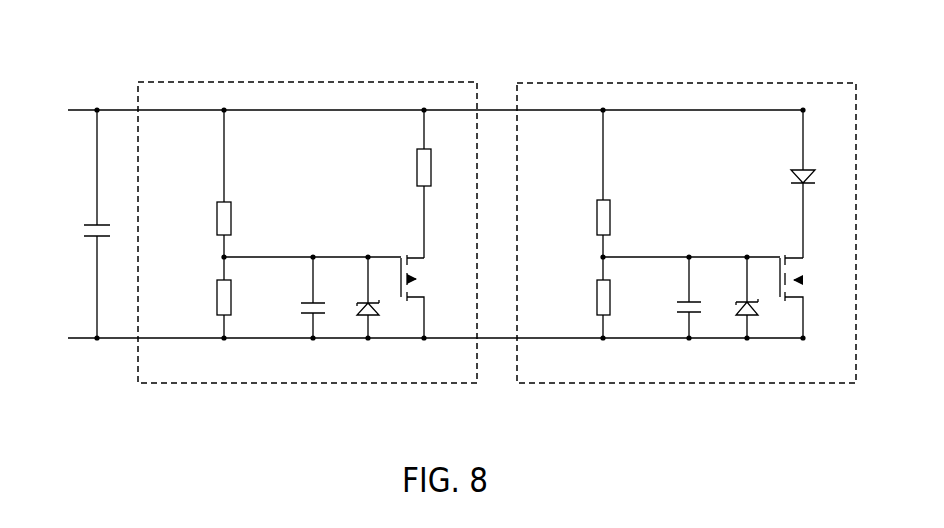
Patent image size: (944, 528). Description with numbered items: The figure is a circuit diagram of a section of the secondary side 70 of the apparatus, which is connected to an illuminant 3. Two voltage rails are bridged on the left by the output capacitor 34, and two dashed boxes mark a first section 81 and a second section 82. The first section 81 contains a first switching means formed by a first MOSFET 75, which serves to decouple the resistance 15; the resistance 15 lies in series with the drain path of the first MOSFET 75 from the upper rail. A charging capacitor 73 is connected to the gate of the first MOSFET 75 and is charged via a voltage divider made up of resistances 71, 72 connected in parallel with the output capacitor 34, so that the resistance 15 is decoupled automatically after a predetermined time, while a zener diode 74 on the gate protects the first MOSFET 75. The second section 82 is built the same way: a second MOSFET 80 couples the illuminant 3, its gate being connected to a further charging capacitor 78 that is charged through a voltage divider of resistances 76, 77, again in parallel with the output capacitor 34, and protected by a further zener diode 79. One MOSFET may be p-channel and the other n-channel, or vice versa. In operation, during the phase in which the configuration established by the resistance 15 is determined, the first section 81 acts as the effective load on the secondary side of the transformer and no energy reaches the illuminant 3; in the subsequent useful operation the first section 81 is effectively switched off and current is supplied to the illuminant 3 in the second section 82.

The secondary side 70 is at (89, 50).
The output capacitor 34 is at (84, 224).
The resistance 71 is at (217, 225).
The resistance 72 is at (217, 298).
The charging capacitor 73 is at (301, 303).
The zener diode 74 is at (366, 302).
The first MOSFET 75 is at (387, 244).
The resistance 15 is at (417, 168).
The first section 81 is at (413, 384).
The resistance 76 is at (597, 228).
The resistance 77 is at (597, 300).
The further charging capacitor 78 is at (677, 302).
The further zener diode 79 is at (745, 302).
The second MOSFET 80 is at (764, 244).
The illuminant 3 is at (791, 171).
The second section 82 is at (790, 384).